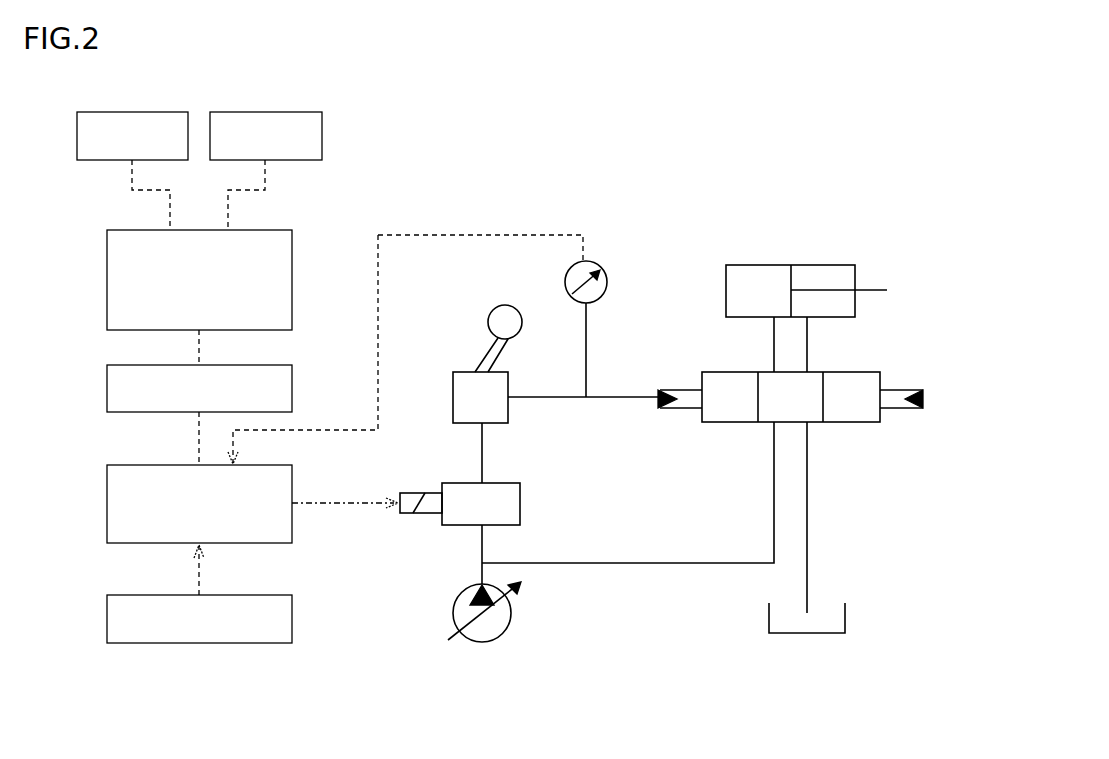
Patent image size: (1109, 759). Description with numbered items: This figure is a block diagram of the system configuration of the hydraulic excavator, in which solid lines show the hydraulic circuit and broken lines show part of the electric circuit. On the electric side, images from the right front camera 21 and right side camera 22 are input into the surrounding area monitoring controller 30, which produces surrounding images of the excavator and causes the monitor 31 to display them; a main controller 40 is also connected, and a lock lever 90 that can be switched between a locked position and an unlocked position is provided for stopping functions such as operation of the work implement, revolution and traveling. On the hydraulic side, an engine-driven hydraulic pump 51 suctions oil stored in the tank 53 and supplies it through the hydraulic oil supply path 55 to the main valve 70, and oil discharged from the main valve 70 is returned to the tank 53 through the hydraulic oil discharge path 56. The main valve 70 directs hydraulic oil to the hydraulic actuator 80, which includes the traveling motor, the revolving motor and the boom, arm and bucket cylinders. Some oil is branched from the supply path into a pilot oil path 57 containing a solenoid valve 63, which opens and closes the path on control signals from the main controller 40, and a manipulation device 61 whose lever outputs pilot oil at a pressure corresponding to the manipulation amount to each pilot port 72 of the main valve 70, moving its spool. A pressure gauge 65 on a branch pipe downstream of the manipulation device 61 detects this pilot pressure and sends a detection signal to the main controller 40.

The right front camera 21 is at (138, 112).
The right side camera 22 is at (272, 112).
The surrounding area monitoring controller 30 is at (240, 230).
The monitor 31 is at (240, 365).
The main controller 40 is at (292, 480).
The lock lever 90 is at (240, 595).
The manipulation device 61 is at (453, 399).
The solenoid valve 63 is at (520, 503).
The pressure gauge 65 is at (608, 282).
The hydraulic pump 51 is at (453, 614).
The pilot oil path 57 is at (481, 550).
The hydraulic oil supply path 55 is at (637, 564).
The tank 53 is at (847, 615).
The hydraulic oil discharge path 56 is at (810, 465).
The main valve 70 is at (845, 372).
The pilot port 72 is at (684, 390).
The hydraulic actuator 80 is at (822, 263).